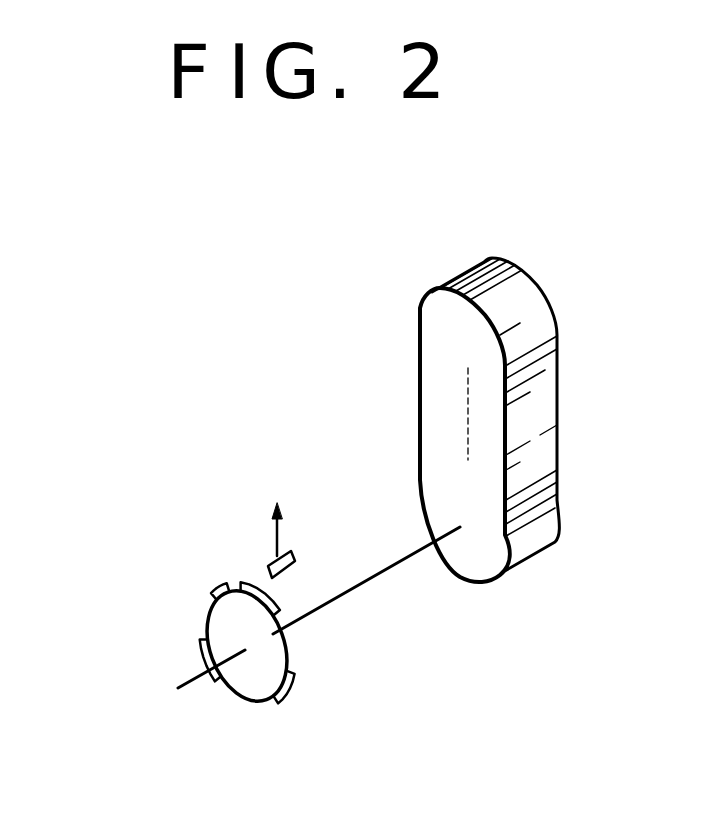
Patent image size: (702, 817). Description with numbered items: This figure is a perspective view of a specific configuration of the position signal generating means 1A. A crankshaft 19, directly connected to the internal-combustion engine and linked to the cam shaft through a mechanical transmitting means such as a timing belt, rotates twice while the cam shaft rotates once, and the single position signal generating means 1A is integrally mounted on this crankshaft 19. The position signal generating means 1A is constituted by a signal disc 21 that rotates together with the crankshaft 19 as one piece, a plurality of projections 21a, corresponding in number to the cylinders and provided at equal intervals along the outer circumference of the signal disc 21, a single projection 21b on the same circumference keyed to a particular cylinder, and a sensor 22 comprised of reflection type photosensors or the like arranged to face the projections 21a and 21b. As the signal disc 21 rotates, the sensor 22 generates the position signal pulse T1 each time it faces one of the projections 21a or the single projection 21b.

The crankshaft 19 is at (365, 582).
The signal disc 21 is at (247, 676).
The projections 21a is at (297, 693).
The single projection 21b is at (214, 592).
The sensor 22 is at (296, 560).
The position signal pulse T1 is at (277, 548).
The position signal generating means 1A is at (189, 658).